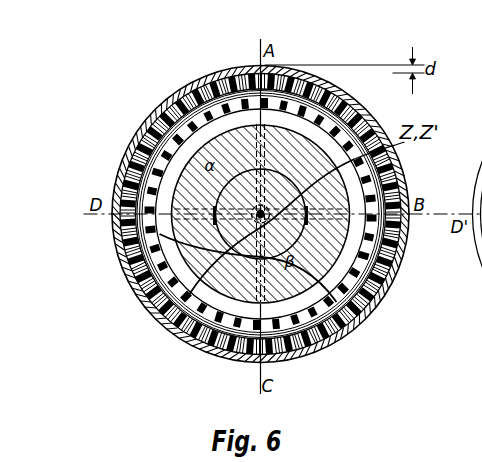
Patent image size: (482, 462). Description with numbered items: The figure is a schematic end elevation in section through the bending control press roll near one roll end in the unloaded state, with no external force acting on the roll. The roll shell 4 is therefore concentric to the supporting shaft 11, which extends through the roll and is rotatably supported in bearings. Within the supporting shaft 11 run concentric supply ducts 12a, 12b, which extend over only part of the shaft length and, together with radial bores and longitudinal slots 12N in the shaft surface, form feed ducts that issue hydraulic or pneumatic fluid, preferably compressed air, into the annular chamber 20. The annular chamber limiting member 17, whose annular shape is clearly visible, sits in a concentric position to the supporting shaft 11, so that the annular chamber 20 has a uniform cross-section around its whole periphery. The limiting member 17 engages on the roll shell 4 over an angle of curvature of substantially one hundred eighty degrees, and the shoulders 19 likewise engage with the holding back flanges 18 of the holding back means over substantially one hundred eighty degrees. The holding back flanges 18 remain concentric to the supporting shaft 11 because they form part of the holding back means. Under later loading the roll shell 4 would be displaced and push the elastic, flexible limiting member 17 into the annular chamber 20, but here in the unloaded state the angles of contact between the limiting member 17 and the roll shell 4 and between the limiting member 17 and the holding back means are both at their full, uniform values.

The roll shell 4 is at (197, 350).
The supporting shaft 11 is at (320, 280).
The longitudinal slots 12N is at (123, 236).
The supply duct 12b is at (150, 279).
The supply duct 12a is at (160, 325).
The annular chamber limiting member 17 is at (388, 258).
The holding back flanges 18 is at (370, 280).
The shoulders 19 is at (261, 214).
The annular chamber 20 is at (303, 307).